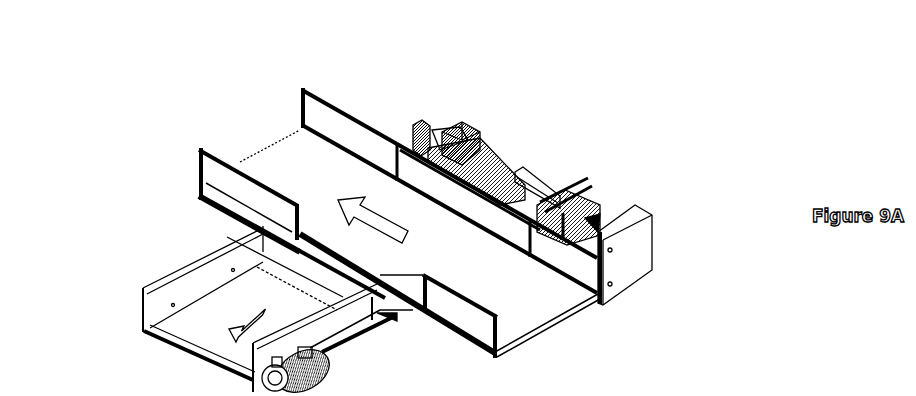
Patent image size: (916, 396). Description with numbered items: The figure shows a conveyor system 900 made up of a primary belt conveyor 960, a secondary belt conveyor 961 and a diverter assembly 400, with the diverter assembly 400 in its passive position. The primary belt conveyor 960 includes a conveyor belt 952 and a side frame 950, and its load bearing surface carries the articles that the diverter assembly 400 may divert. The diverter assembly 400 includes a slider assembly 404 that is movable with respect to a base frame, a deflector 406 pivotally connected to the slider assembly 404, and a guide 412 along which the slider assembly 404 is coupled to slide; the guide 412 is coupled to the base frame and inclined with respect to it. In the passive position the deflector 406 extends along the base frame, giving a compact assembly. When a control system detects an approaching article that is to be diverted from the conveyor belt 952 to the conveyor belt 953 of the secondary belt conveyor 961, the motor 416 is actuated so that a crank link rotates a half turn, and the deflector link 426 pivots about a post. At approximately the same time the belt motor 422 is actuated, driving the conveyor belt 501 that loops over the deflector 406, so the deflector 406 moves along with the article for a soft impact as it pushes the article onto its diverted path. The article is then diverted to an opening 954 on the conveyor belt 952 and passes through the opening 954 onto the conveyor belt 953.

The conveyor system 900 is at (700, 124).
The side frame 950 is at (328, 107).
The conveyor belt 952 is at (328, 184).
The conveyor belt 953 is at (266, 304).
The opening 954 is at (347, 252).
The primary belt conveyor 960 is at (557, 328).
The secondary belt conveyor 961 is at (336, 350).
The conveyor belt 501 is at (488, 211).
The diverter assembly 400 is at (512, 134).
The slider assembly 404 is at (591, 194).
The deflector 406 is at (428, 160).
The guide 412 is at (538, 187).
The motor 416 is at (450, 132).
The belt motor 422 is at (600, 216).
The deflector link 426 is at (424, 156).